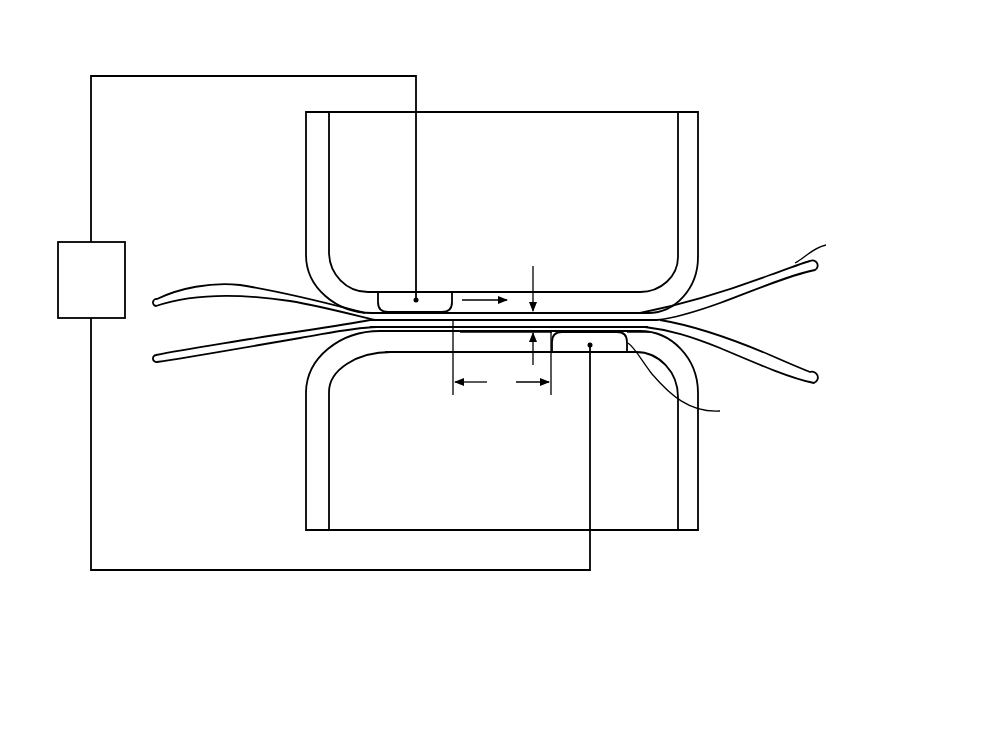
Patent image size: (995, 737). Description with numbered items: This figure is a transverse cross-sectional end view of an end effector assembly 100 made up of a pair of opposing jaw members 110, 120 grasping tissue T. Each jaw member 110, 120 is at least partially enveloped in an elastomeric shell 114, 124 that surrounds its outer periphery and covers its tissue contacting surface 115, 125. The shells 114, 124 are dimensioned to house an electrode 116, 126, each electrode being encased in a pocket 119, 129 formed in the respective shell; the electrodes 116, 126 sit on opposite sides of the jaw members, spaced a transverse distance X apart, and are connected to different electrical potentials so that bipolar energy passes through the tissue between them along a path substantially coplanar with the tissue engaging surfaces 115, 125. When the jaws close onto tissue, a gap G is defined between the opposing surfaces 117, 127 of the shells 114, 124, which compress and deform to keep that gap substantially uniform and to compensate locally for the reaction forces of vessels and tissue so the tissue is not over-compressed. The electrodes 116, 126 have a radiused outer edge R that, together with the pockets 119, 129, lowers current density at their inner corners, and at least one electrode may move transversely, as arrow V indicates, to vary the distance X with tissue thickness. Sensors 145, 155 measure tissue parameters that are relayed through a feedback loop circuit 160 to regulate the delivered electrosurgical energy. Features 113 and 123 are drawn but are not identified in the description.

The end effector assembly 100 is at (212, 44).
The jaw member 110 is at (523, 183).
The tissue contacting surface of lower jaw 113 is at (372, 353).
The elastomeric shell 114 is at (696, 158).
The tissue contacting surface 115 is at (558, 292).
The electrode 116 is at (387, 297).
The opposing surface 117 is at (602, 312).
The pocket 119 is at (450, 290).
The jaw member 120 is at (523, 500).
The tissue contacting surface of upper jaw 123 is at (627, 292).
The elastomeric shell 124 is at (697, 453).
The tissue contacting surface 125 is at (397, 355).
The electrode 126 is at (606, 353).
The opposing surface 127 is at (404, 331).
The pocket 129 is at (555, 353).
The sensor 145 is at (418, 92).
The sensor 155 is at (590, 548).
The feedback loop circuit 160 is at (110, 301).